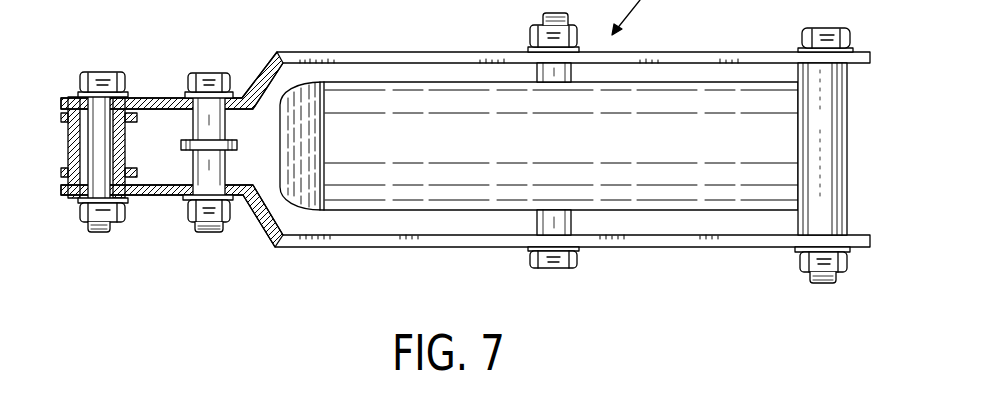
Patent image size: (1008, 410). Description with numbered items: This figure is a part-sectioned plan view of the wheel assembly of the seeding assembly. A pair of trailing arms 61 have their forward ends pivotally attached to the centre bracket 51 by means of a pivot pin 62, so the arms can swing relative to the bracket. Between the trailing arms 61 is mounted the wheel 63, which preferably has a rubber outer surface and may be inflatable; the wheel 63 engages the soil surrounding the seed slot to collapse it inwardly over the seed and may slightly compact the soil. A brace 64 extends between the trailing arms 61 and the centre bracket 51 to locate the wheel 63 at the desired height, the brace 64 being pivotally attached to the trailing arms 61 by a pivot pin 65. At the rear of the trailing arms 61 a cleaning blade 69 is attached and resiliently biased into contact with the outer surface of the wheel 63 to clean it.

The centre bracket 51 is at (67, 153).
The trailing arms 61 is at (363, 58).
The pivot pin 62 is at (100, 125).
The wheel 63 is at (688, 153).
The brace 64 is at (185, 147).
The pivot pin 65 is at (215, 132).
The cleaning blade 69 is at (818, 133).